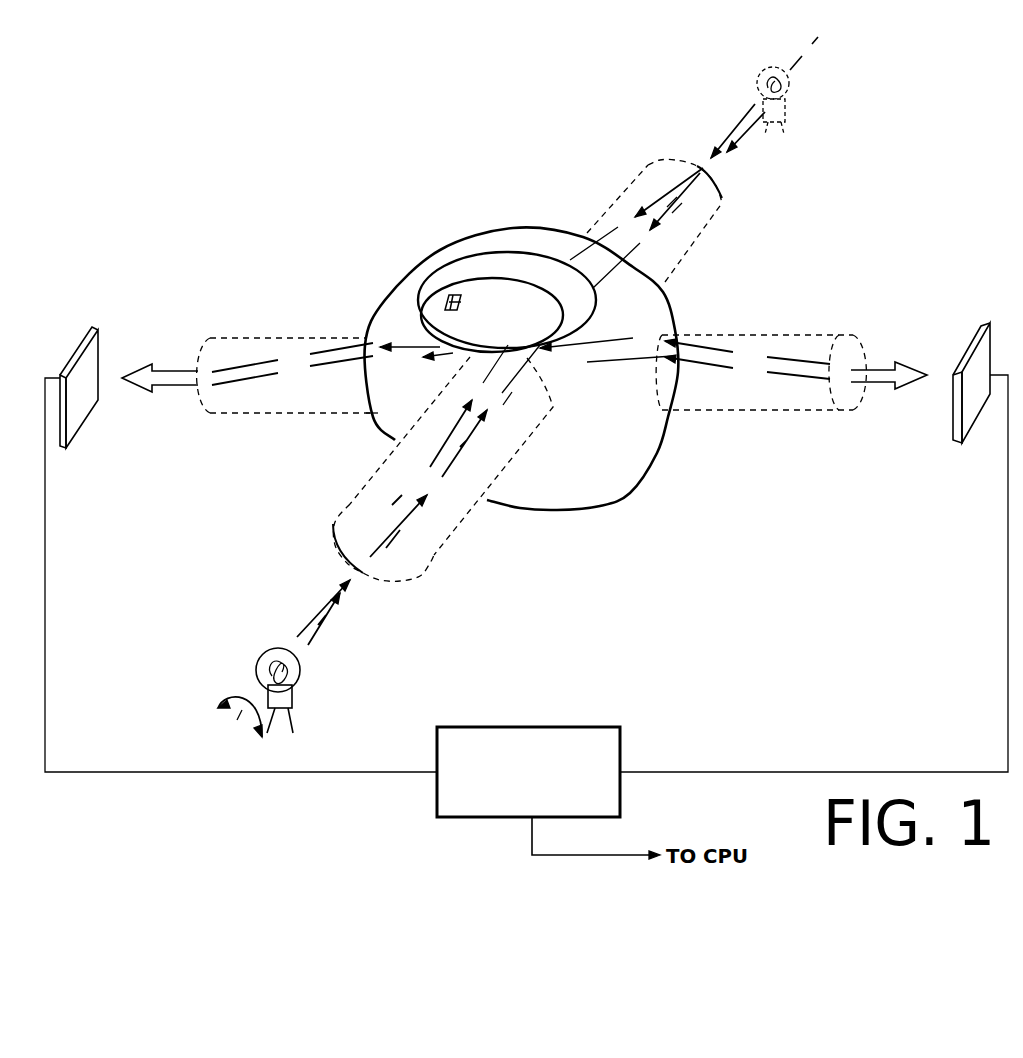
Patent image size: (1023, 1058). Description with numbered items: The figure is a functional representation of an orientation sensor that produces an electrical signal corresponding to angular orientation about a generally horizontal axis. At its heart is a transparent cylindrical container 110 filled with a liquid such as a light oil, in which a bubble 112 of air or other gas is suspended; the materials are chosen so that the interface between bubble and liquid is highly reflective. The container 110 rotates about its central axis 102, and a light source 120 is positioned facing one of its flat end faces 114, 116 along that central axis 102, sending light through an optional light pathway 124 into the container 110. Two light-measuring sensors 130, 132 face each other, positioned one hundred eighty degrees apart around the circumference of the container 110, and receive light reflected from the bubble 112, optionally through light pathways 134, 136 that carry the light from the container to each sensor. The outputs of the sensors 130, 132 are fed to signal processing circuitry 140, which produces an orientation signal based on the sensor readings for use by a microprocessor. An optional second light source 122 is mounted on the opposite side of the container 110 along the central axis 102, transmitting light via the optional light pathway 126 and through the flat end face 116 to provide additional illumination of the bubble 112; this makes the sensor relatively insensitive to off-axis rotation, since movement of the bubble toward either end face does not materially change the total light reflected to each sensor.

The central axis 102 is at (213, 745).
The cylindrical container 110 is at (573, 510).
The bubble 112 is at (443, 300).
The flat end face 114 is at (377, 413).
The flat end face 116 is at (503, 227).
The light source 120 is at (292, 695).
The second light source 122 is at (787, 95).
The light pathway 124 is at (420, 575).
The light pathway 126 is at (648, 170).
The light-measuring sensor 130 is at (77, 405).
The light-measuring sensor 132 is at (970, 413).
The light pathway 134 is at (255, 415).
The light pathway 136 is at (752, 412).
The signal processing circuitry 140 is at (623, 743).